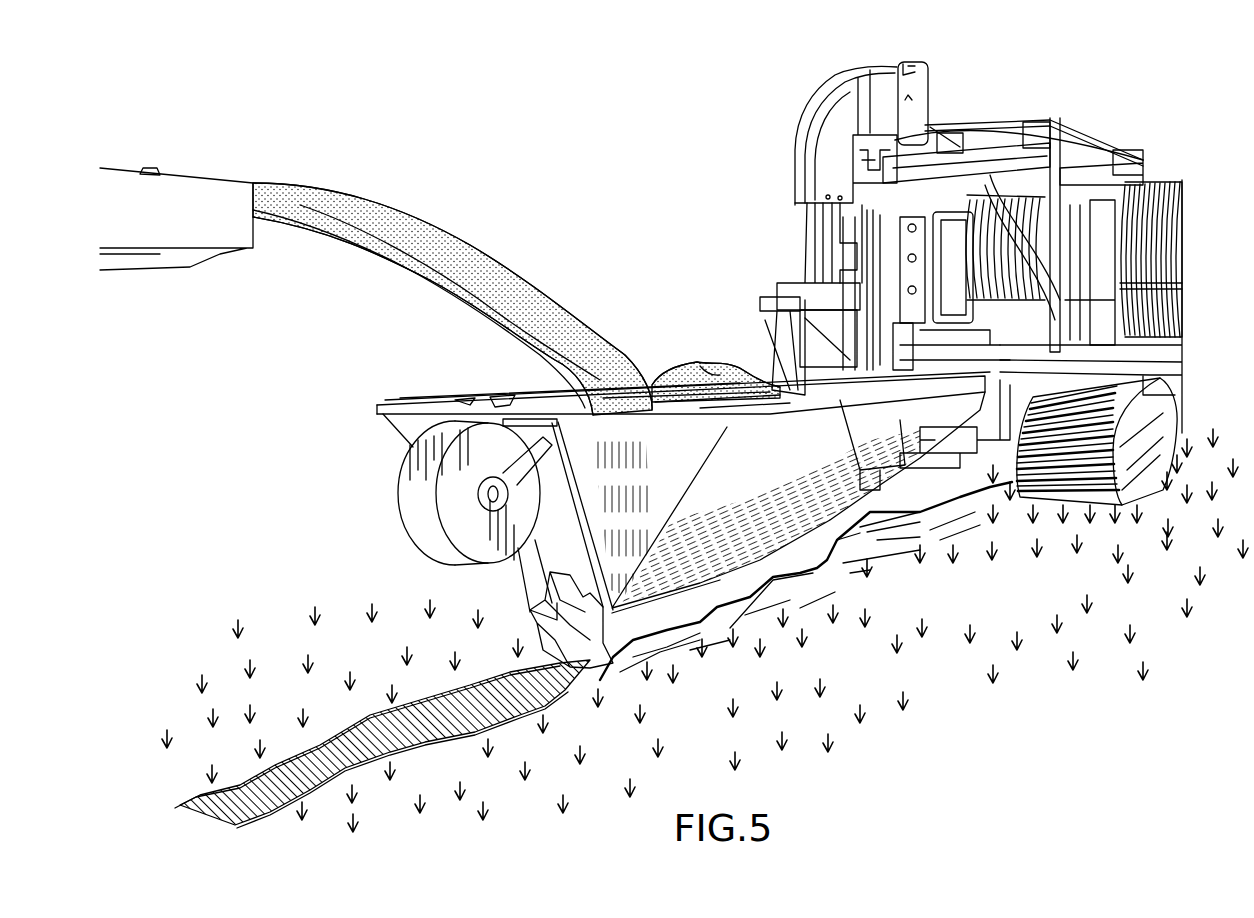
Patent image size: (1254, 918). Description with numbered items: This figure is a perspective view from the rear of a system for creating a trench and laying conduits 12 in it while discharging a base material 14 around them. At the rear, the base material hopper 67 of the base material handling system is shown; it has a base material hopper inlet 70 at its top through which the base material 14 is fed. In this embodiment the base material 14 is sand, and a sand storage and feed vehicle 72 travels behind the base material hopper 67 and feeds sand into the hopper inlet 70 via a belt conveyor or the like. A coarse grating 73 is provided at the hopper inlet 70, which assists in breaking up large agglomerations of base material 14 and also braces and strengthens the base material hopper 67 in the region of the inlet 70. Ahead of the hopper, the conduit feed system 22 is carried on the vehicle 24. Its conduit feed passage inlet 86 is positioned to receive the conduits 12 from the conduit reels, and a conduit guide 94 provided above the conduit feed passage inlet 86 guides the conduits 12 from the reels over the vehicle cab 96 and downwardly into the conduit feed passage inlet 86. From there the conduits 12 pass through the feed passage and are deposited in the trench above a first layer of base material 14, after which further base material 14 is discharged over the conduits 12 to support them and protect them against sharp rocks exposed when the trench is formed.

The conduit 12 is at (945, 125).
The base material 14 is at (668, 390).
The conduit feed system 22 is at (580, 250).
The vehicle 24 is at (1075, 175).
The base material hopper 67 is at (432, 405).
The base material hopper inlet 70 is at (765, 408).
The sand storage and feed vehicle 72 is at (190, 198).
The coarse grating 73 is at (735, 405).
The conduit feed passage inlet 86 is at (792, 295).
The conduit guide 94 is at (852, 93).
The vehicle cab 96 is at (998, 170).